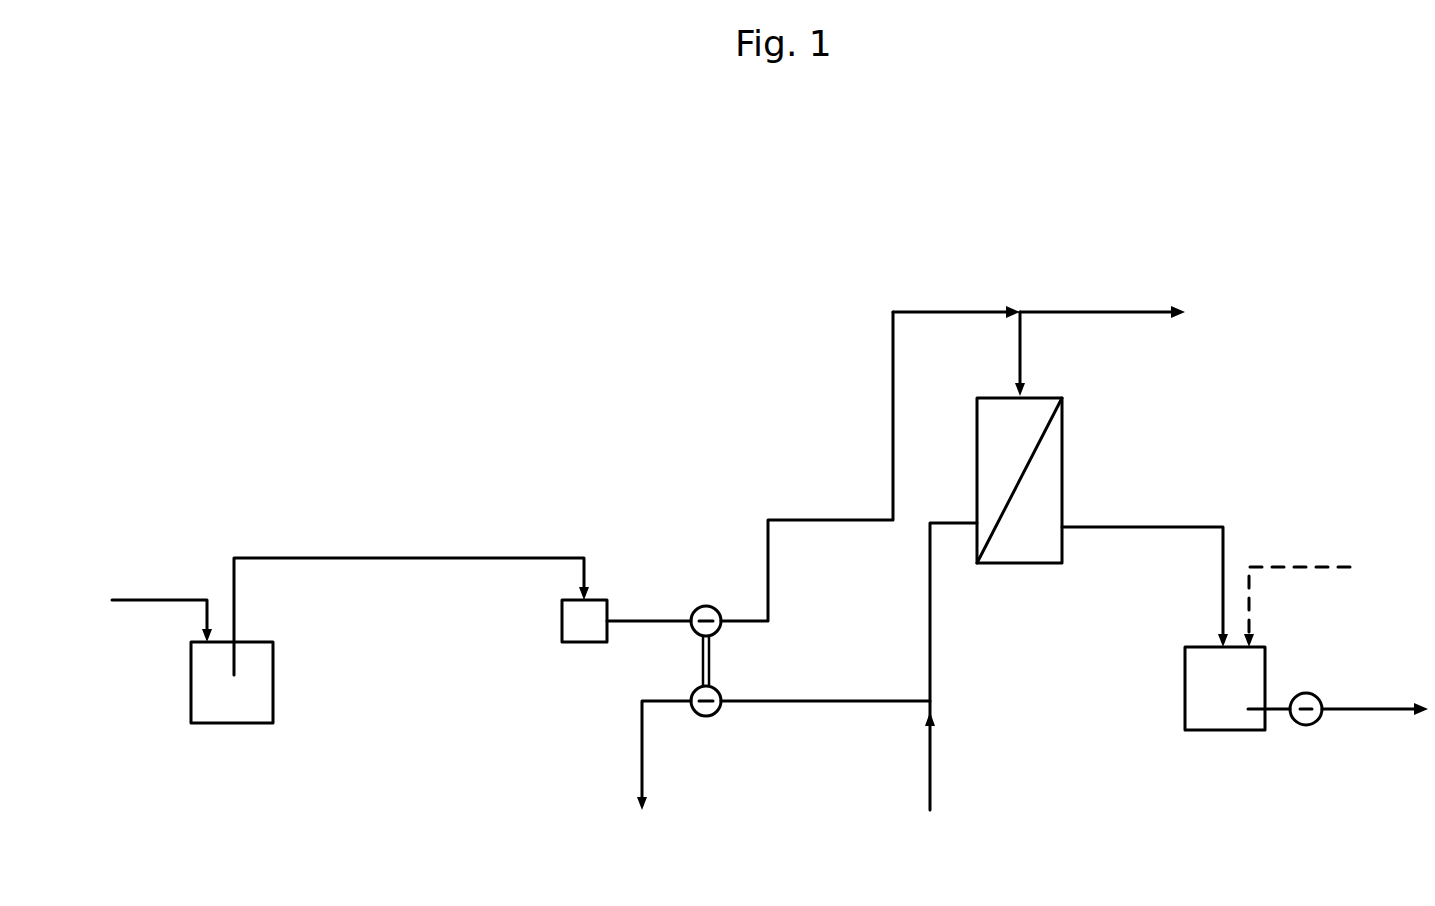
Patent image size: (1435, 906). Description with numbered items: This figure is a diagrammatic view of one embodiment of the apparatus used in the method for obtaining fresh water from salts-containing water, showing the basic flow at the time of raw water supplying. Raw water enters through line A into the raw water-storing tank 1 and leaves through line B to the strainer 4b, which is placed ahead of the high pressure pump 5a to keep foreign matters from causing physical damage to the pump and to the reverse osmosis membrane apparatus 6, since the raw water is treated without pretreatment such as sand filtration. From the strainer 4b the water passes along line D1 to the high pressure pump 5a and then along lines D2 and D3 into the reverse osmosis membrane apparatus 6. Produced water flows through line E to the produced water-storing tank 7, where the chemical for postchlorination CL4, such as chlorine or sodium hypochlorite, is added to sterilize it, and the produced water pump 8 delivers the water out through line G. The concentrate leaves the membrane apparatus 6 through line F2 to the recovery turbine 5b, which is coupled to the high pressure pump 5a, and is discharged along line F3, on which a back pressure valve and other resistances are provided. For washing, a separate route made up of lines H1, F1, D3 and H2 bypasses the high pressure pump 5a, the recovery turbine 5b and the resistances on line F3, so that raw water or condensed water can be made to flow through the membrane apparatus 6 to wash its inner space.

The raw water-storing tank 1 is at (231, 724).
The strainer 4b is at (558, 624).
The high pressure pump 5a is at (705, 596).
The recovery turbine 5b is at (708, 726).
The reverse osmosis membrane apparatus 6 is at (1072, 448).
The produced water-storing tank 7 is at (1227, 742).
The produced water pump 8 is at (1320, 734).
The line A is at (147, 600).
The line B is at (385, 559).
The line D1 is at (645, 618).
The line D2 is at (810, 519).
The line D3 is at (1022, 345).
The line E is at (1138, 527).
The line F1 is at (934, 622).
The line F2 is at (857, 706).
The line F3 is at (642, 757).
The line G is at (1367, 709).
The line H1 is at (934, 768).
The line H2 is at (1094, 312).
The chemical for postchlorination CL4 is at (1334, 597).